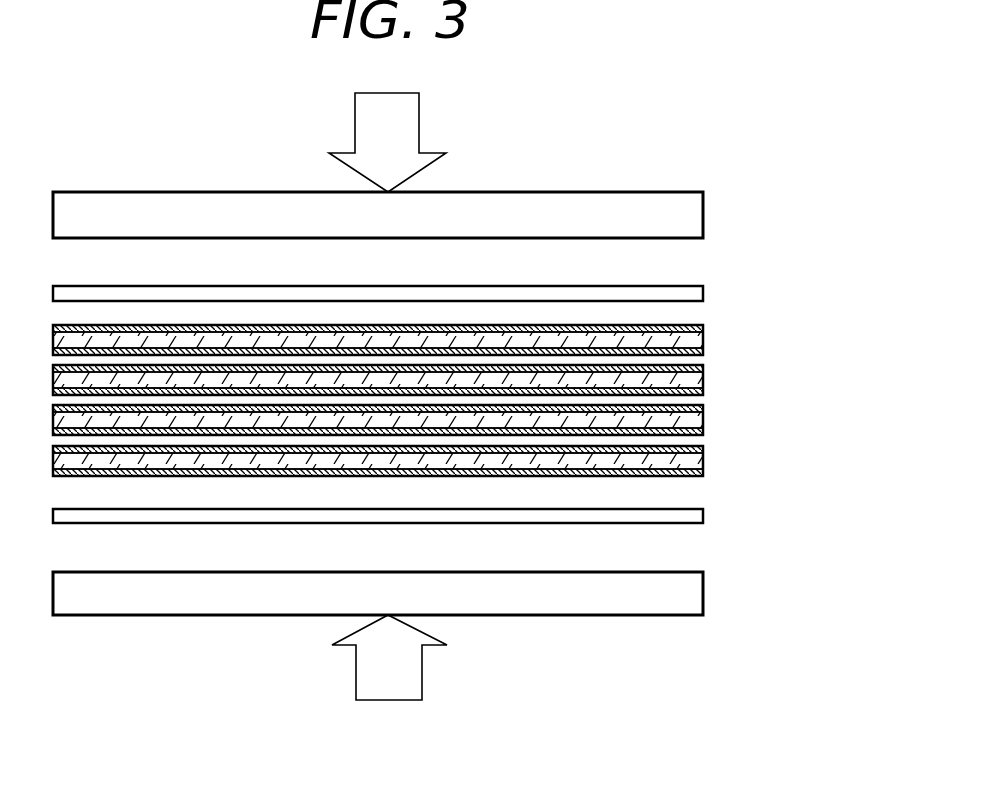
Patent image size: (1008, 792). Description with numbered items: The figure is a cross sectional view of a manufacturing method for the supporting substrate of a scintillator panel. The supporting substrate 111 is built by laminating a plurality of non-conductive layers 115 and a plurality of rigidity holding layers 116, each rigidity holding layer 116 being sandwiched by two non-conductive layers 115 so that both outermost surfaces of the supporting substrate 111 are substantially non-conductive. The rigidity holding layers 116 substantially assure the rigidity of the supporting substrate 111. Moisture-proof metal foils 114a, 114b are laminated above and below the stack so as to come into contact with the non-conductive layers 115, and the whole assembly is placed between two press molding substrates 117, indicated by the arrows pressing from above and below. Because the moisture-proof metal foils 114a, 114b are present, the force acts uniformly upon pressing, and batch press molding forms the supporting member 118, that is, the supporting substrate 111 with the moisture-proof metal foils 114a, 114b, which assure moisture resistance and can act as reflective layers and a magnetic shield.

The supporting substrate 111 is at (441, 378).
The moisture-proof metal foil 114a is at (697, 293).
The moisture-proof metal foil 114b is at (697, 516).
The non-conductive layer 115 is at (704, 367).
The rigidity holding layer 116 is at (703, 379).
The press molding substrate 117 is at (697, 209).
The supporting member 118 is at (477, 399).